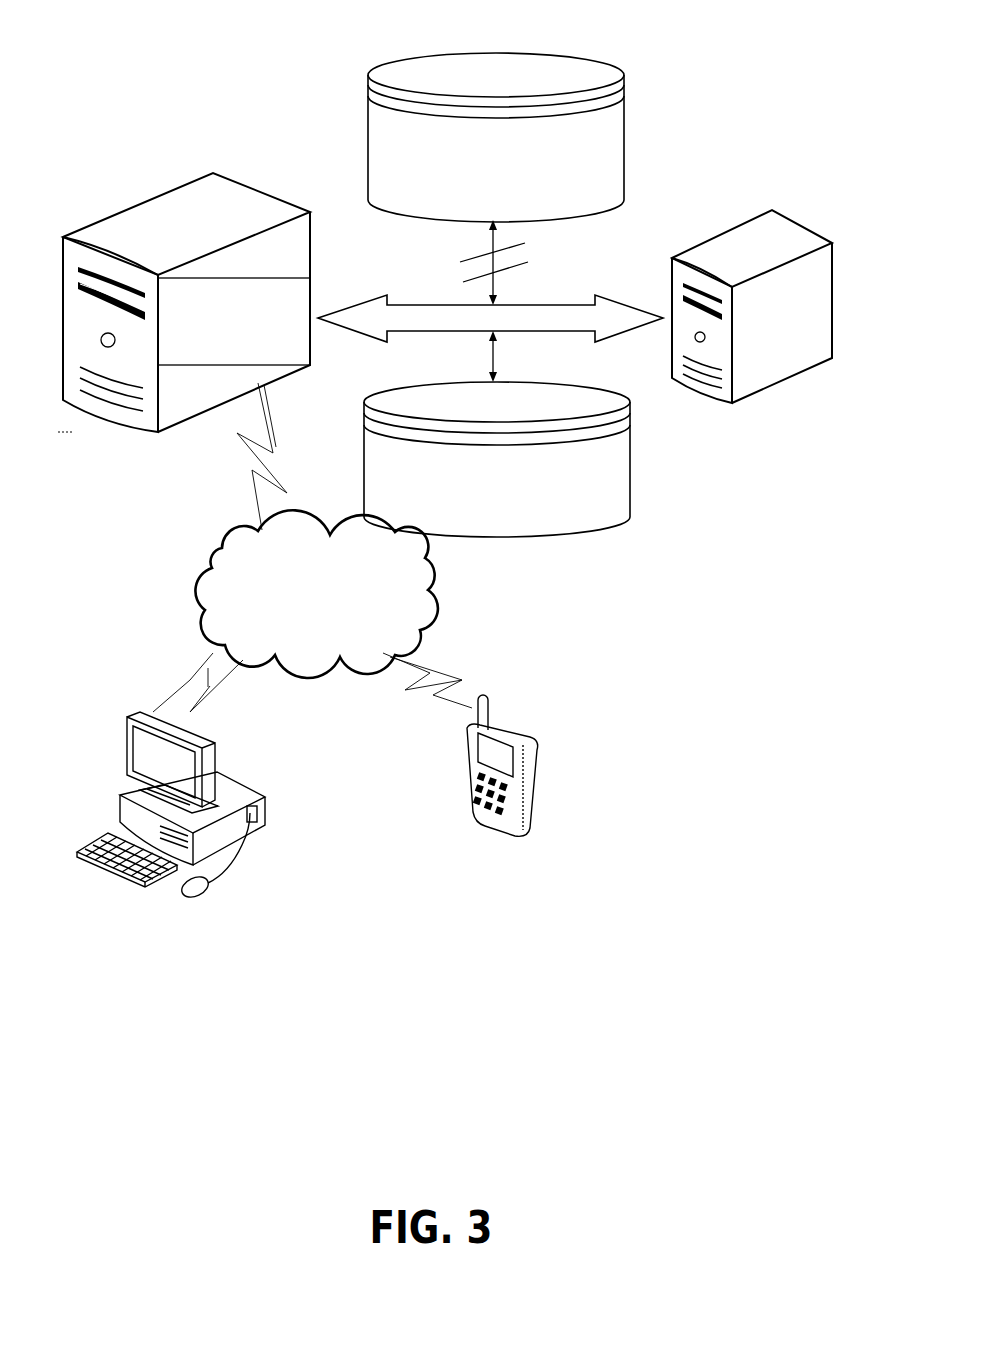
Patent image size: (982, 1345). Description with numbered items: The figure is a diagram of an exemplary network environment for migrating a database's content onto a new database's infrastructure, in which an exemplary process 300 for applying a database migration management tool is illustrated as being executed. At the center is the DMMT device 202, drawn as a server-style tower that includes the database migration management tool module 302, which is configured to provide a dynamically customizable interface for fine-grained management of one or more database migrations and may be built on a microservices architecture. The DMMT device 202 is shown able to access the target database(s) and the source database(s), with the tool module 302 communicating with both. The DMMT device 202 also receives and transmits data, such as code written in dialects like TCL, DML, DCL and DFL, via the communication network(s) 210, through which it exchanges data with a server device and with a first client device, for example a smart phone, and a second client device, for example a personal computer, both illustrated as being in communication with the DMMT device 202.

The exemplary process 300 is at (271, 86).
The DMMT device 202 is at (113, 210).
The database migration management tool module 302 is at (234, 321).
The communication network(s) 210 is at (408, 503).